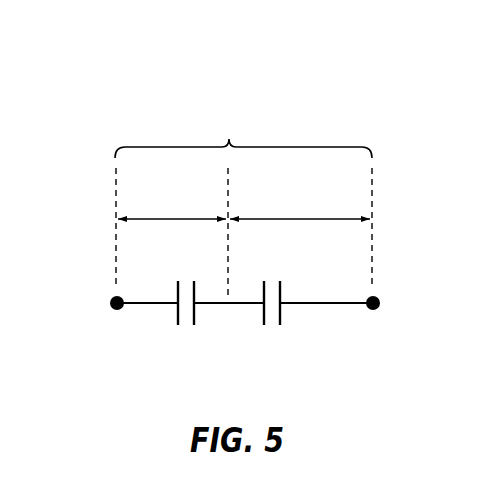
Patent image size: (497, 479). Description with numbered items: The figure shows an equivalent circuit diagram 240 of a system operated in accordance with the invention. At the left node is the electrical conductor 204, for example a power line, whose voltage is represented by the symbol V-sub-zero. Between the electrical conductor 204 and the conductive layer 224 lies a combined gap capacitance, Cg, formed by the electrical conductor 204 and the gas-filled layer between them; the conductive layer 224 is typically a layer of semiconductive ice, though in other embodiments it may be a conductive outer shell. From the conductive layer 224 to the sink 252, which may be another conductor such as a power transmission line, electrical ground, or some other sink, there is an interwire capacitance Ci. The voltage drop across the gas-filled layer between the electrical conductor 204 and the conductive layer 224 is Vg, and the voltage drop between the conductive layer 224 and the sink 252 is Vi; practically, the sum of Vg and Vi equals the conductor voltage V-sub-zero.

The equivalent circuit diagram 240 is at (113, 75).
The electrical conductor 204 is at (112, 310).
The conductive layer 224 is at (228, 310).
The sink 252 is at (379, 308).